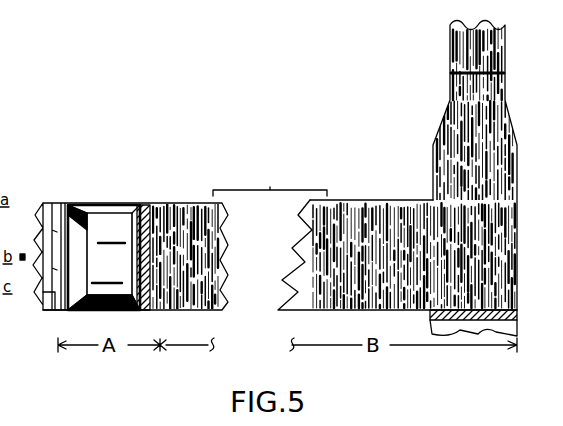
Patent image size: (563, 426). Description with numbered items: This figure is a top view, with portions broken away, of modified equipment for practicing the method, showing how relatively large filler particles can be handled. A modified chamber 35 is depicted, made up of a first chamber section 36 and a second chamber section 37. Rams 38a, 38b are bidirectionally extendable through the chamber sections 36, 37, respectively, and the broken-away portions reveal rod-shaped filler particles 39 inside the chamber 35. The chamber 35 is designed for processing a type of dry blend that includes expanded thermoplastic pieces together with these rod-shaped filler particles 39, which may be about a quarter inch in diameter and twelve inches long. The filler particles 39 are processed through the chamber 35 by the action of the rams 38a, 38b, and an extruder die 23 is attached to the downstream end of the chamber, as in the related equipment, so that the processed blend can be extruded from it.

The extruder die 23 is at (455, 71).
The modified chamber 35 is at (380, 192).
The first chamber section 36 is at (349, 200).
The second chamber section 37 is at (518, 151).
The ram 38a is at (50, 319).
The ram 38b is at (429, 319).
The rod-shaped filler particles 39 is at (189, 203).